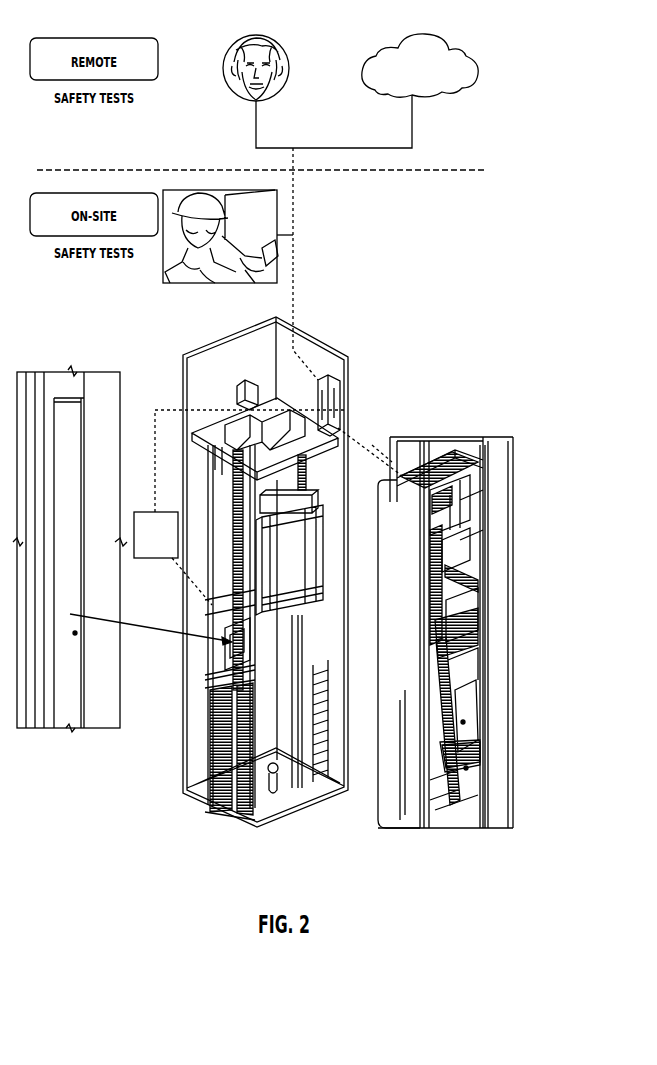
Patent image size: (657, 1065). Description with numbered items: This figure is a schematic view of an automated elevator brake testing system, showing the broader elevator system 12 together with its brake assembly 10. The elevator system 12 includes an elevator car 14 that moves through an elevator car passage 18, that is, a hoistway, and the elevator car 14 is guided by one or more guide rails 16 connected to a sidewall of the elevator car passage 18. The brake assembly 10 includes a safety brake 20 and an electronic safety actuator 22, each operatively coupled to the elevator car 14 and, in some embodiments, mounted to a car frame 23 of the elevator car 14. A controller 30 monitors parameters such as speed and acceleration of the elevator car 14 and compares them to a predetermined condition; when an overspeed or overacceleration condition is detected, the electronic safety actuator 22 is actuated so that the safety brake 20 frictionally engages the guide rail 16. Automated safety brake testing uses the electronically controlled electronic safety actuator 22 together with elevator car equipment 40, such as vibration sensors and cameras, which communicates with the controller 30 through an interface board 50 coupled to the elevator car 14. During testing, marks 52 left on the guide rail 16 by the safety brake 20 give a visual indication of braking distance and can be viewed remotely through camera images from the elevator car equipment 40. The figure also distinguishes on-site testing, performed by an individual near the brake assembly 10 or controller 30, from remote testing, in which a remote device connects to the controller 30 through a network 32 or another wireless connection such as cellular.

The brake assembly 10 is at (456, 604).
The elevator system 12 is at (328, 341).
The elevator car 14 is at (303, 537).
The guide rail 16 is at (410, 786).
The elevator car passage 18 is at (272, 725).
The safety brake 20 is at (458, 668).
The electronic safety actuator 22 is at (473, 530).
The car frame 23 is at (497, 595).
The controller 30 is at (335, 403).
The network 32 is at (458, 48).
The elevator car equipment 40 is at (289, 501).
The interface board 50 is at (146, 512).
The marks 52 is at (215, 650).